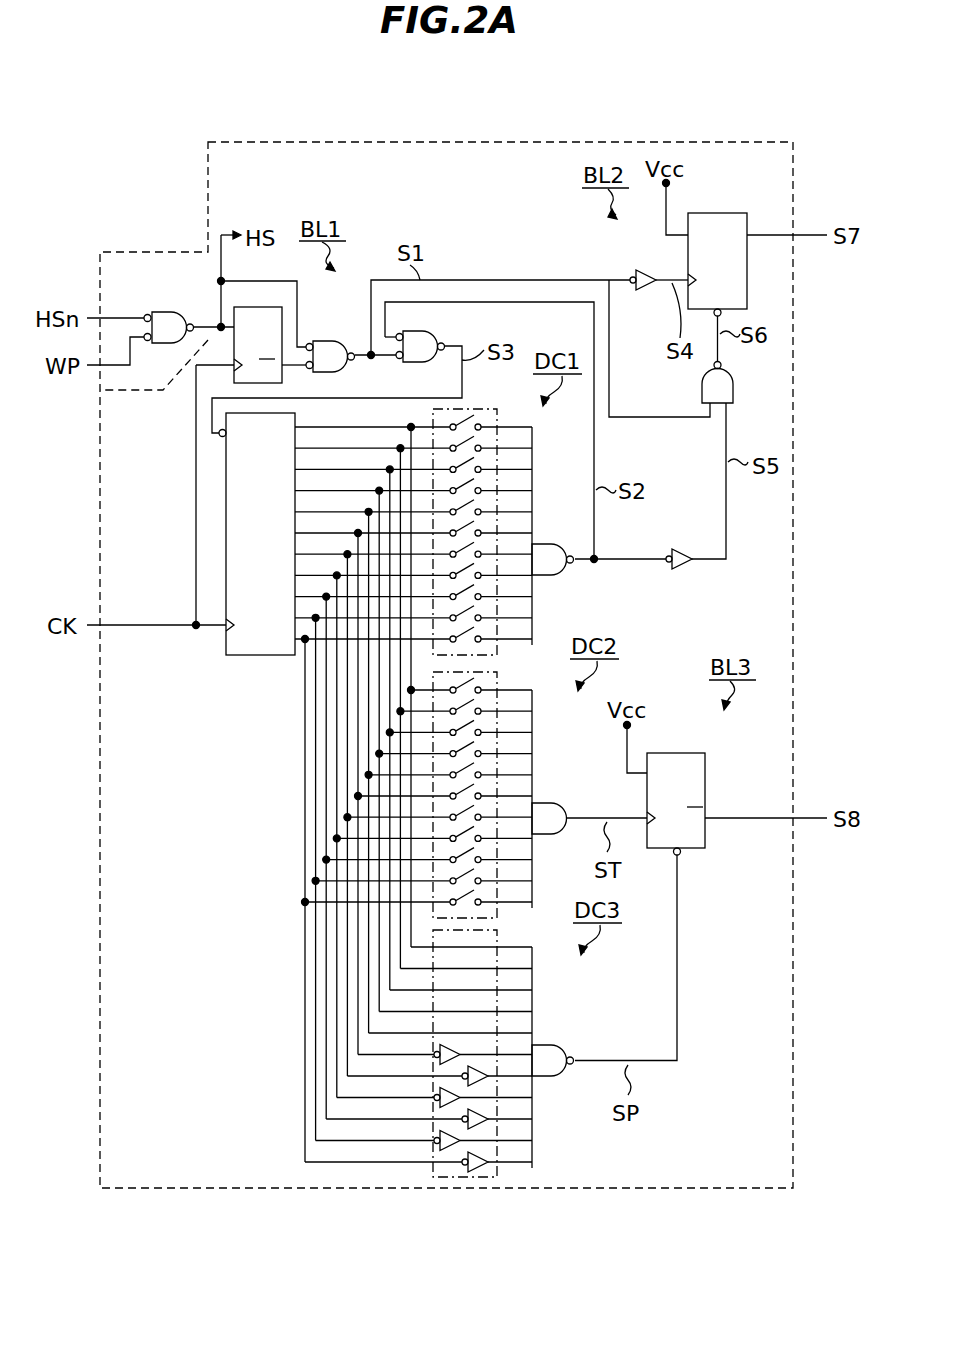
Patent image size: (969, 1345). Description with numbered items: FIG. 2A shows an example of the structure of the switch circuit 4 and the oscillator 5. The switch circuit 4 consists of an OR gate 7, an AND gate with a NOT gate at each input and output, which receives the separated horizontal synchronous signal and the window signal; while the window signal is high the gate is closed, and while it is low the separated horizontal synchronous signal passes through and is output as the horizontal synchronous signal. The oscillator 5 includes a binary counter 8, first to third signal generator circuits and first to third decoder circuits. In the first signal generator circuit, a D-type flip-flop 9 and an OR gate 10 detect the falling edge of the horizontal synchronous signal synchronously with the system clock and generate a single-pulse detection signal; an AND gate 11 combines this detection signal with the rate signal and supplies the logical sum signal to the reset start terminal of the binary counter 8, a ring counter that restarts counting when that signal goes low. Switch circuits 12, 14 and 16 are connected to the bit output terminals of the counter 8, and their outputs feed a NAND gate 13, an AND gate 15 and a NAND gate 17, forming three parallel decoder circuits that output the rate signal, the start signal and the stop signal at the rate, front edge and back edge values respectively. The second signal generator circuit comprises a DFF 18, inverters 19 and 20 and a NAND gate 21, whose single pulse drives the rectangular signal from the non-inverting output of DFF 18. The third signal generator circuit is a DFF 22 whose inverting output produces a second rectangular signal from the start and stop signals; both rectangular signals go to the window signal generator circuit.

The switch circuit 4 is at (128, 252).
The oscillator 5 is at (586, 143).
The OR gate 7 is at (164, 320).
The binary counter 8 is at (265, 656).
The D-type flip-flop 9 is at (282, 374).
The OR gate 10 is at (330, 340).
The AND gate 11 is at (419, 361).
The first switch circuit 12 is at (484, 409).
The NAND gate 13 is at (545, 544).
The second switch circuit 14 is at (497, 683).
The AND gate 15 is at (545, 803).
The third switch circuit 16 is at (497, 941).
The NAND gate 17 is at (545, 1045).
The D-type flip-flop 18 is at (718, 213).
The inverter 19 is at (650, 292).
The inverter 20 is at (688, 548).
The NAND gate 21 is at (702, 392).
The D-type flip-flop 22 is at (705, 782).